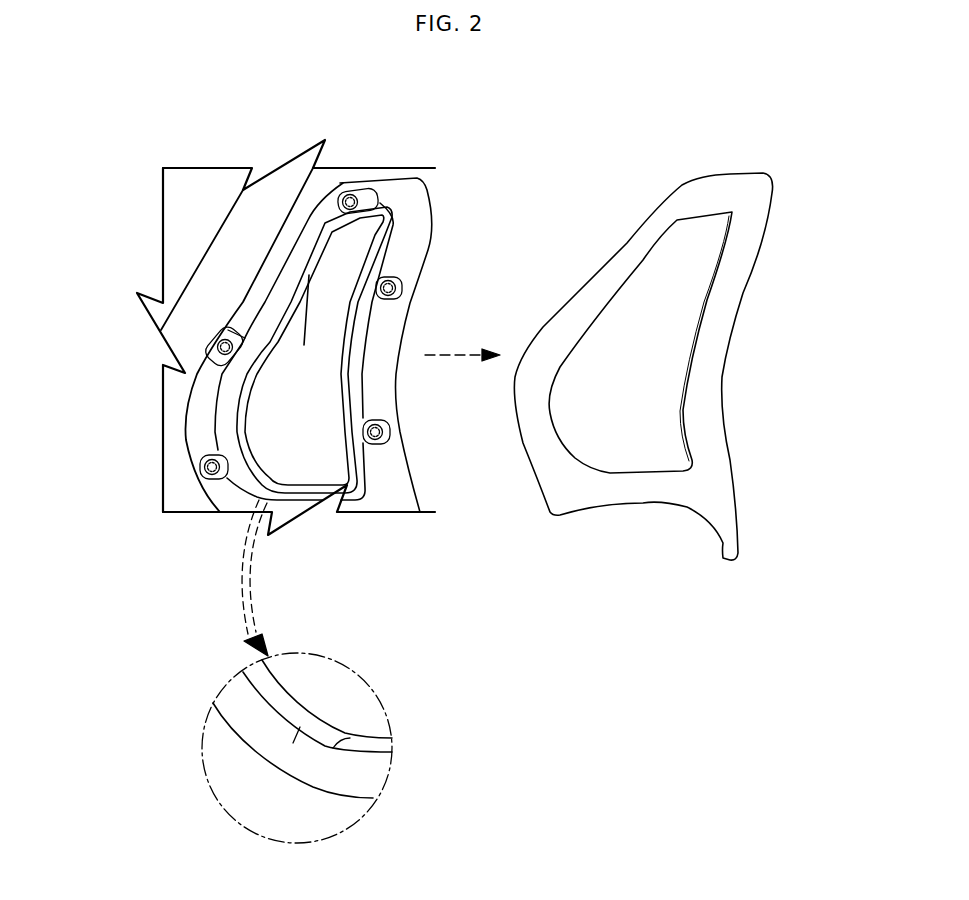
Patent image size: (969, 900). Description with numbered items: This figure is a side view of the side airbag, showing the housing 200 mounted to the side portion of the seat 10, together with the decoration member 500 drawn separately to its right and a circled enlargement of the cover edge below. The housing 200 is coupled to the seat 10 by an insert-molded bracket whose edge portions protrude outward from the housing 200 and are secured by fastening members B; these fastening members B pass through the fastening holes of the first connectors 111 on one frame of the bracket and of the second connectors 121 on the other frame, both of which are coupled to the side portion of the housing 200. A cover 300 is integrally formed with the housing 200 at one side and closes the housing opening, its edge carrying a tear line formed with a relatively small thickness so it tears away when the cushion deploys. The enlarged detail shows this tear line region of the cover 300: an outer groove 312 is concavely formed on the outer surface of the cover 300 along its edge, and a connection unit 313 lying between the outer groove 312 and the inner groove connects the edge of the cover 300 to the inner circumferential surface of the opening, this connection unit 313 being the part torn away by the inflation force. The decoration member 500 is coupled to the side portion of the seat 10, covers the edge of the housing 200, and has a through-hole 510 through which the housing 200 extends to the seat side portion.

The seat 10 is at (232, 267).
The second connector 121 is at (226, 330).
The housing 200 is at (220, 406).
The fastening member B is at (348, 196).
The first connector 111 is at (398, 288).
The cover 300 is at (368, 705).
The outer groove 312 is at (333, 748).
The connection unit 313 is at (300, 727).
The decoration member 500 is at (728, 183).
The through-hole 510 is at (645, 378).